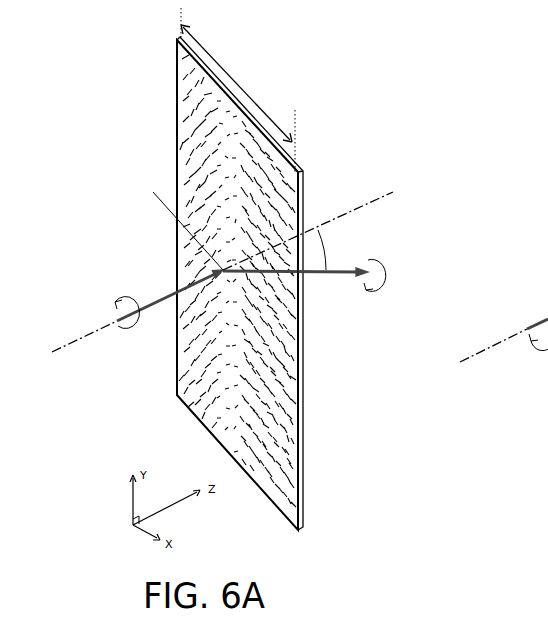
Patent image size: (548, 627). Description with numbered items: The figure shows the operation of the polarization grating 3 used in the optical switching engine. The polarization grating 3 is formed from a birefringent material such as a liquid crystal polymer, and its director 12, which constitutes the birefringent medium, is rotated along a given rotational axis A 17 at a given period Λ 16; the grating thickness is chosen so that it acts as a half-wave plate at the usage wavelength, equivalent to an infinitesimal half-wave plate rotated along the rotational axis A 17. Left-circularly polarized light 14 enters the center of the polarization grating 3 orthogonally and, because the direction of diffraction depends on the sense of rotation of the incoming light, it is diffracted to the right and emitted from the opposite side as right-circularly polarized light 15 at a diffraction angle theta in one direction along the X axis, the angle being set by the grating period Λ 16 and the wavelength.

The polarization grating 3 is at (305, 167).
The director 12 is at (177, 150).
The left-circularly polarized light 14 is at (116, 272).
The right-circularly polarized light 15 is at (385, 277).
The period Λ 16 is at (264, 90).
The rotational axis A 17 is at (303, 357).